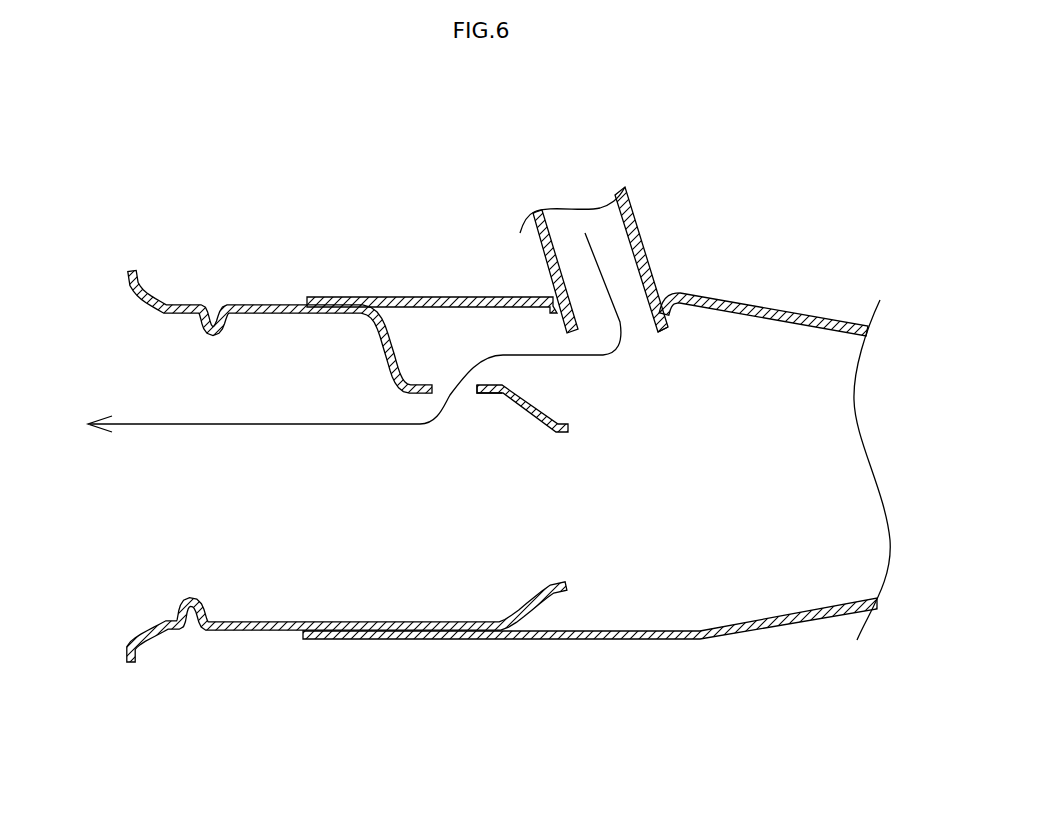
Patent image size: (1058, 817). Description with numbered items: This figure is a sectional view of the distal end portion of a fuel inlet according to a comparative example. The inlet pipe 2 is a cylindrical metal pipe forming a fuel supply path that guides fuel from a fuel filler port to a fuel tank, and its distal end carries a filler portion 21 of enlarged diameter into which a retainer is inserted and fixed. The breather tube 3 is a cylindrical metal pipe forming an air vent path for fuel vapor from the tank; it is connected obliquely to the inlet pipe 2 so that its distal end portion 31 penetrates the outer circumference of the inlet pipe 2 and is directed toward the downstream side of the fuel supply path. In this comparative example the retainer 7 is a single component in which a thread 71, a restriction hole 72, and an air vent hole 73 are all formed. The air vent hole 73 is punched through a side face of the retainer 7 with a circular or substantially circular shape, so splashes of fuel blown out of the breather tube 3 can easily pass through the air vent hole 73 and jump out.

The inlet pipe 2 is at (596, 470).
The filler portion 21 is at (592, 641).
The breather tube 3 is at (621, 297).
The distal end portion 31 is at (673, 323).
The retainer 7 is at (358, 396).
The thread 71 is at (190, 600).
The restriction hole 72 is at (560, 433).
The air vent hole 73 is at (475, 393).